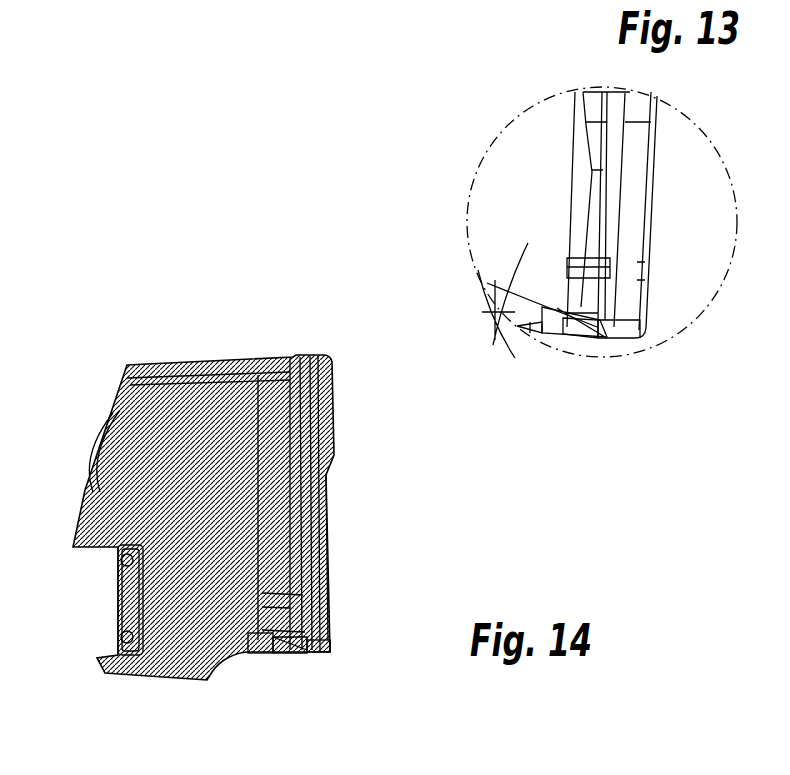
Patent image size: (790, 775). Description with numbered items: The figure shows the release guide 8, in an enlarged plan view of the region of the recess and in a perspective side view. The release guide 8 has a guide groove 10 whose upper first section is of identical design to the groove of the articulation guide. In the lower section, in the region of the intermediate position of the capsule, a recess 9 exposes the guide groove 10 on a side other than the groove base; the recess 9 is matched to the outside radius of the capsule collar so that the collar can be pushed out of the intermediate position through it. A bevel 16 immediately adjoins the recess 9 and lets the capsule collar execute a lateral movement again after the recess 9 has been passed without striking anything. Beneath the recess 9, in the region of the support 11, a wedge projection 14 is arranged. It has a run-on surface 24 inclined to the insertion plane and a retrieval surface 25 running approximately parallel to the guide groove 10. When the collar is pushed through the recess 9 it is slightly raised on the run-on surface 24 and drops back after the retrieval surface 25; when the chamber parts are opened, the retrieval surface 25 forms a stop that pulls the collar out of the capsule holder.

In FIG. 14, the release guide 8 is at (237, 357).
In FIG. 13, the recess 9 is at (610, 268).
In FIG. 14, the recess 9 is at (330, 583).
In FIG. 13, the guide groove 10 is at (613, 90).
In FIG. 14, the guide groove 10 is at (303, 357).
In FIG. 14, the support 11 is at (335, 642).
In FIG. 13, the wedge projection 14 is at (563, 323).
In FIG. 14, the wedge projection 14 is at (287, 655).
In FIG. 13, the bevel 16 is at (582, 195).
In FIG. 14, the bevel 16 is at (330, 530).
In FIG. 13, the run-on surface 24 is at (617, 338).
In FIG. 14, the run-on surface 24 is at (312, 652).
In FIG. 13, the retrieval surface 25 is at (527, 327).
In FIG. 14, the retrieval surface 25 is at (255, 655).